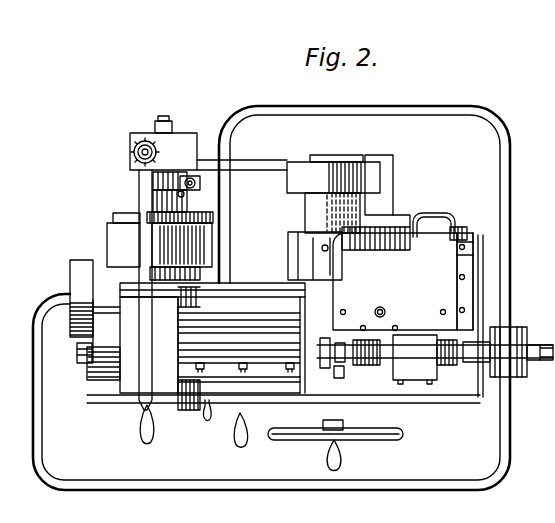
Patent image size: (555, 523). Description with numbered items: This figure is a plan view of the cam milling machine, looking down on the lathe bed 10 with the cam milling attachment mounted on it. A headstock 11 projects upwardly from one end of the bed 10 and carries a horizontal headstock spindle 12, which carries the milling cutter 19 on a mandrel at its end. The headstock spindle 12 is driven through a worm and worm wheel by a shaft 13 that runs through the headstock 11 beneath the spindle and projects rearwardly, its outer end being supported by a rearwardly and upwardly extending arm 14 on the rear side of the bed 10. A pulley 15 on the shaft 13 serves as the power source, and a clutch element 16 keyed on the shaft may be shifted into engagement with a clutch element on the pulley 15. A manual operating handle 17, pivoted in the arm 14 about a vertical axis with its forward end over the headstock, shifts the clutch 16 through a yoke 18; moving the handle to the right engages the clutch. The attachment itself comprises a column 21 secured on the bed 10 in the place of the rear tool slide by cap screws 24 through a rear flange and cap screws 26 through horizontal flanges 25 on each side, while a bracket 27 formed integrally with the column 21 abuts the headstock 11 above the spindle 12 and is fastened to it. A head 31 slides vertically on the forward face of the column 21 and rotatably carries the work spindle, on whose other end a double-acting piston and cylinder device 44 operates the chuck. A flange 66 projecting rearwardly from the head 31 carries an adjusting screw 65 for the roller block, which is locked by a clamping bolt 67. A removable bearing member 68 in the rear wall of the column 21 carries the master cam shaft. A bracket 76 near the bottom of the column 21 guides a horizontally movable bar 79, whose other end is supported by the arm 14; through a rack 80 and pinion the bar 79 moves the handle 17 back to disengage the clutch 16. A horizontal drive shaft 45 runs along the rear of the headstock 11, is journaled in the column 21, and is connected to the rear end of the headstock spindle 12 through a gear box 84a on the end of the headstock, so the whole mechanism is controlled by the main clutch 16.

The bed 10 is at (457, 382).
The headstock 11 is at (257, 372).
The headstock spindle 12 is at (339, 380).
The shaft 13 is at (170, 121).
The arm 14 is at (183, 195).
The pulley 15 is at (117, 243).
The clutch element 16 is at (152, 197).
The manual operating handle 17 is at (147, 432).
The yoke 18 is at (190, 178).
The milling cutter 19 is at (335, 360).
The column 21 is at (448, 278).
The cap screws 24 is at (456, 230).
The horizontal flange 25 is at (464, 258).
The cap screws 26 is at (461, 250).
The bracket 27 is at (323, 373).
The head 31 is at (468, 300).
The double-acting piston and cylinder device 44 is at (510, 332).
The rotatable shaft 45 is at (242, 285).
The adjusting screw 65 is at (386, 312).
The flange 66 is at (365, 302).
The clamping bolt 67 is at (385, 340).
The removable bearing member 68 is at (418, 215).
The bracket 76 is at (380, 195).
The horizontally movable bar 79 is at (261, 164).
The rack 80 is at (163, 153).
The gear box 84a is at (103, 349).